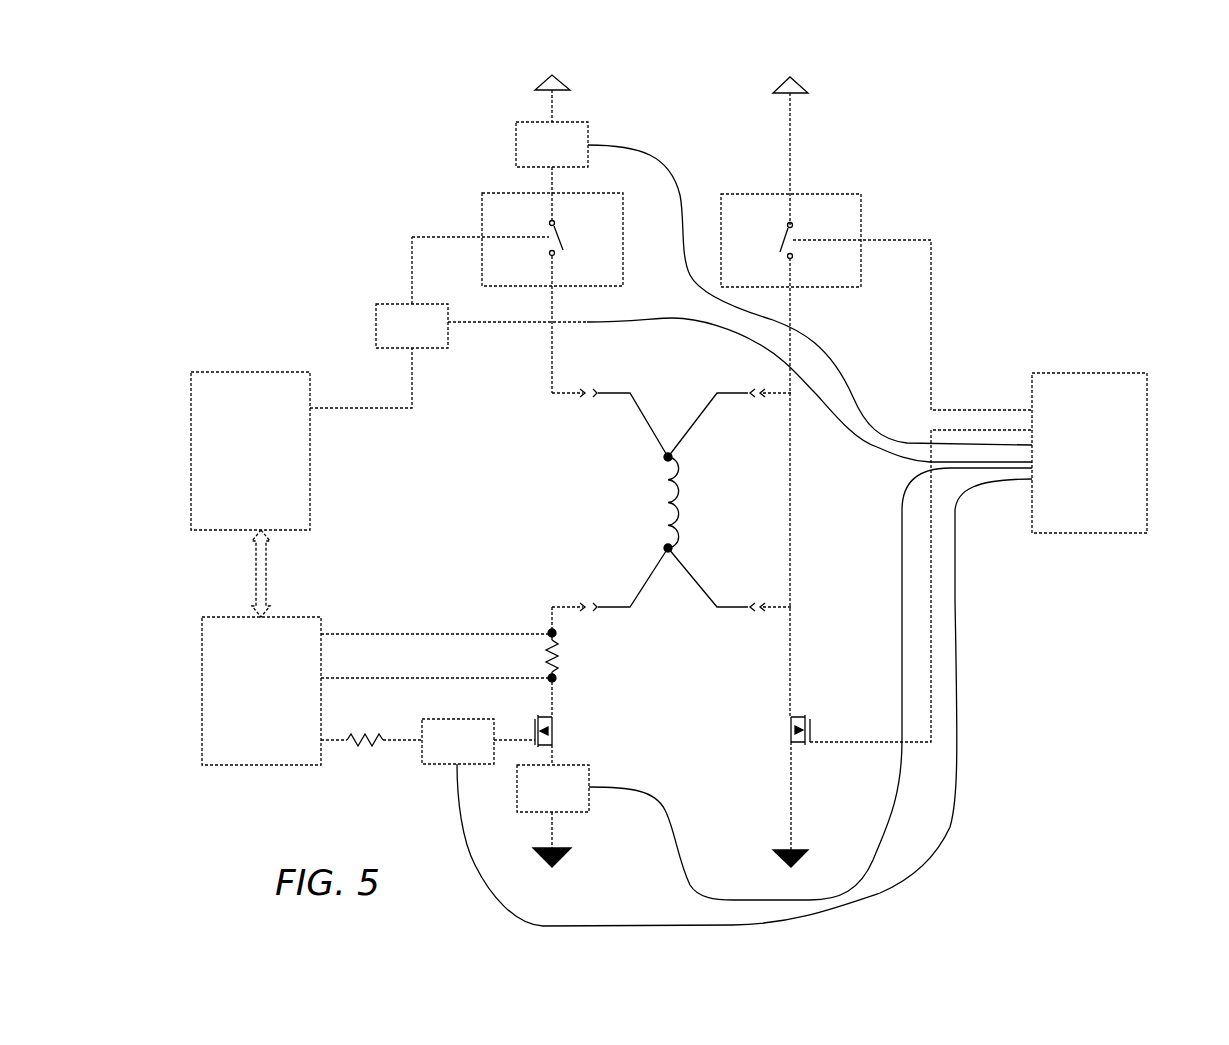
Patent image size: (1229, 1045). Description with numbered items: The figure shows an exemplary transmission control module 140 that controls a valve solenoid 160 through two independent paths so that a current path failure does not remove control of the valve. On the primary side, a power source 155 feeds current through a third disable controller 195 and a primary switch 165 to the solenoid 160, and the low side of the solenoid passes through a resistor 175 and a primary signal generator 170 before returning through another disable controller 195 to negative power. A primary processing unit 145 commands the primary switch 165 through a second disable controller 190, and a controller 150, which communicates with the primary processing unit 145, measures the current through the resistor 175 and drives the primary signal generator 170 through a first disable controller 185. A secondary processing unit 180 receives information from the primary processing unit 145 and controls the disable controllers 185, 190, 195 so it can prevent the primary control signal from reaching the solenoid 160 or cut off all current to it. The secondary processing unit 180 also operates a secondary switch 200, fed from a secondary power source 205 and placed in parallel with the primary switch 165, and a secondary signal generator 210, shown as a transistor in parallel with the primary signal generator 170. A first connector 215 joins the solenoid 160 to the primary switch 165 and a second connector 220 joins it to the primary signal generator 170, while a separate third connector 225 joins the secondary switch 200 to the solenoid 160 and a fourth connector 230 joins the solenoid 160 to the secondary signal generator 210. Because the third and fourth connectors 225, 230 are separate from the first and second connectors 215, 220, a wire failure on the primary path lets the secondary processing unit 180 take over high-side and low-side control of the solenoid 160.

The transmission control module 140 is at (968, 178).
The primary processing unit 145 is at (191, 397).
The controller 150 is at (202, 638).
The power source 155 is at (574, 82).
The solenoid 160 is at (692, 500).
The primary switch 165 is at (572, 235).
The primary signal generator 170 is at (570, 723).
The resistor 175 is at (572, 650).
The secondary processing unit 180 is at (1147, 388).
The first disable controller 185 is at (414, 777).
The second disable controller 190 is at (370, 300).
The third disable controller 195 is at (500, 134).
The secondary switch 200 is at (773, 230).
The secondary power source 205 is at (815, 84).
The secondary signal generator 210 is at (822, 727).
The first connector 215 is at (588, 410).
The second connector 220 is at (588, 594).
The third connector 225 is at (757, 410).
The fourth connector 230 is at (758, 594).